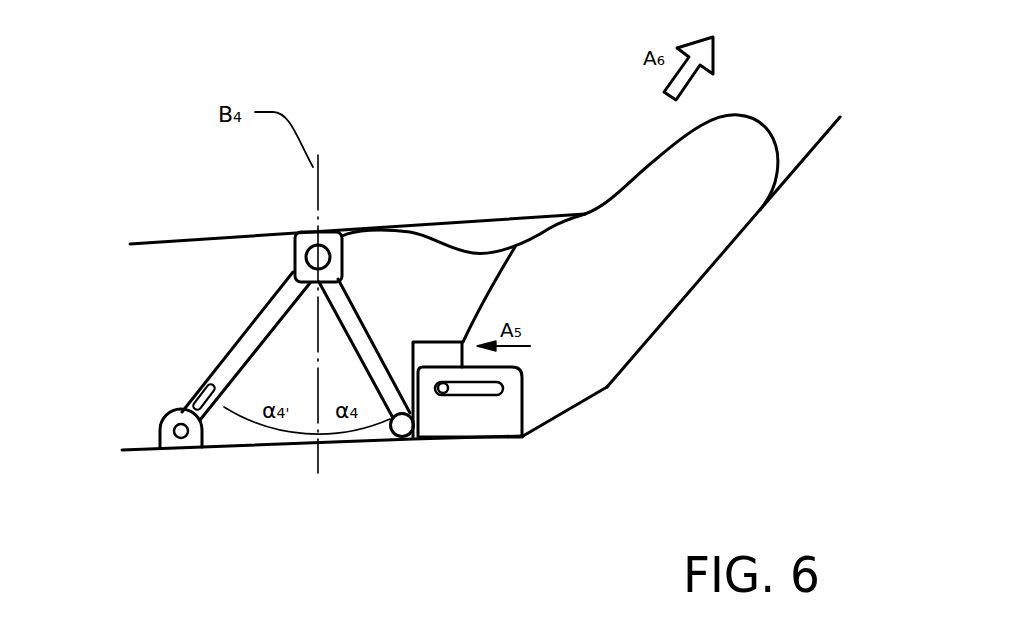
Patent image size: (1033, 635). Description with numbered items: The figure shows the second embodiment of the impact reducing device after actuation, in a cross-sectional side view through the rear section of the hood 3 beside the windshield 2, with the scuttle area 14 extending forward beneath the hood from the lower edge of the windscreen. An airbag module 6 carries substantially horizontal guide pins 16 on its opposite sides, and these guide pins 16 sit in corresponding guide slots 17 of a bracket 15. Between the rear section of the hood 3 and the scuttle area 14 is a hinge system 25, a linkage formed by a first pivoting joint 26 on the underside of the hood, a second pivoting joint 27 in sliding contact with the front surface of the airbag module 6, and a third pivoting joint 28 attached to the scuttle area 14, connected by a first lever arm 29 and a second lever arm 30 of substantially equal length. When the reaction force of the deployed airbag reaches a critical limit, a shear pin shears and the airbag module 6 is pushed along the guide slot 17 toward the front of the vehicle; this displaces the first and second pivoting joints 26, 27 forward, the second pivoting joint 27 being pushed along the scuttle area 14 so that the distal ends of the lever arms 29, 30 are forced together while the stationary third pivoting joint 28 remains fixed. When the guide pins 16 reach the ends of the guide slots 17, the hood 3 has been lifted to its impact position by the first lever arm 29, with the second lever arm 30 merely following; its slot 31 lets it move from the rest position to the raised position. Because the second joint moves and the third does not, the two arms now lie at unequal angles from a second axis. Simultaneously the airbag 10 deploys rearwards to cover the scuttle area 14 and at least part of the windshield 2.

The windshield 2 is at (797, 167).
The hood 3 is at (247, 233).
The airbag module 6 is at (445, 350).
The airbag 10 is at (657, 177).
The scuttle area 14 is at (595, 395).
The bracket 15 is at (515, 402).
The guide pins 16 is at (445, 397).
The guide slots 17 is at (481, 398).
The hinge system 25 is at (262, 464).
The first pivoting joint 26 is at (346, 236).
The second pivoting joint 27 is at (405, 436).
The third pivoting joint 28 is at (168, 417).
The first lever arm 29 is at (360, 328).
The second lever arm 30 is at (250, 341).
The slot 31 is at (190, 393).